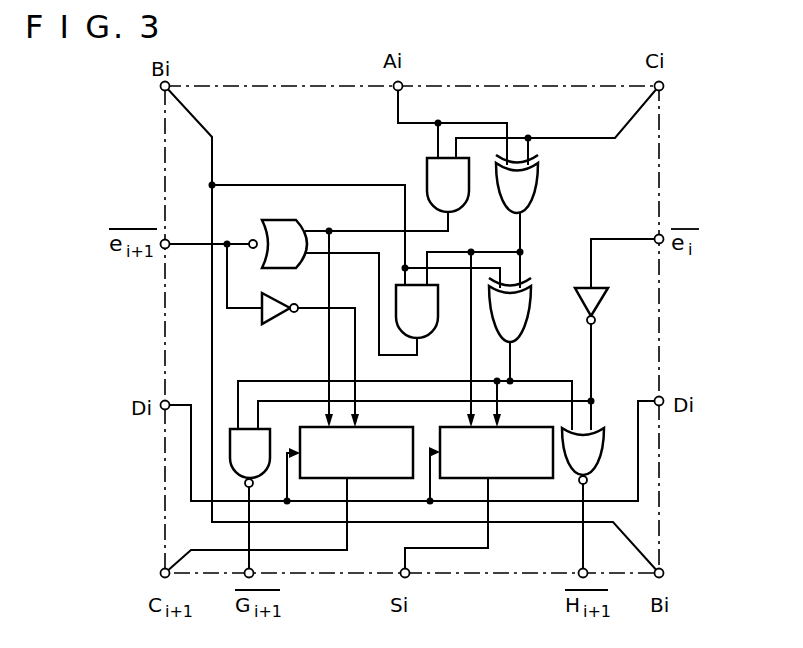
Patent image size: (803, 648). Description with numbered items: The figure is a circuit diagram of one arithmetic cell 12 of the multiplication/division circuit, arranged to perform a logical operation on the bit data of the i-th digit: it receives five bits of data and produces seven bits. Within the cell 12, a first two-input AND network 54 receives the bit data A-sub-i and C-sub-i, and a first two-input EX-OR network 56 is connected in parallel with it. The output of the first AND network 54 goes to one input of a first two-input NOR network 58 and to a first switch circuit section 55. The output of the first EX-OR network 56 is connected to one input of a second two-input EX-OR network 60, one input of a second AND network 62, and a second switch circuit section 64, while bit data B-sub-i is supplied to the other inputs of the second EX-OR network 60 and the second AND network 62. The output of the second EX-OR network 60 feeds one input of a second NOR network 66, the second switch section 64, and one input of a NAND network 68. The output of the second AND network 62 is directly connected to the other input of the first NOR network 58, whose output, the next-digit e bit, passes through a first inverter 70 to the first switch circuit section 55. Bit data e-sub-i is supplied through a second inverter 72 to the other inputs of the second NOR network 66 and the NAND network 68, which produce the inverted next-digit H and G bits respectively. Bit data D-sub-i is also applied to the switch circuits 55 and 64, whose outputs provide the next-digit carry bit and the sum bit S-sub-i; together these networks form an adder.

The arithmetic cell 12 is at (659, 154).
The first 2-input AND network 54 is at (421, 177).
The first 2-input EX-OR network 56 is at (545, 176).
The first 2-input NOR network 58 is at (300, 230).
The second 2-input EX-OR network 60 is at (522, 312).
The second AND network 62 is at (427, 318).
The second switch circuit section 64 is at (538, 480).
The second NOR network 66 is at (590, 440).
The NAND network 68 is at (265, 454).
The first inverter 70 is at (284, 318).
The second inverter 72 is at (594, 300).
The first switch circuit section 55 is at (375, 480).